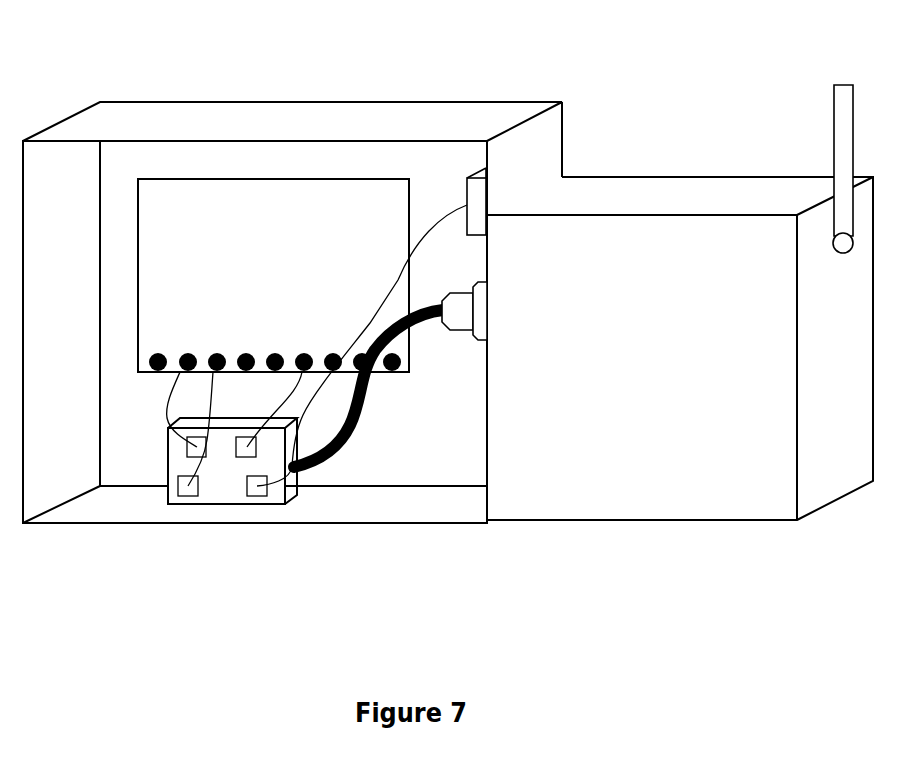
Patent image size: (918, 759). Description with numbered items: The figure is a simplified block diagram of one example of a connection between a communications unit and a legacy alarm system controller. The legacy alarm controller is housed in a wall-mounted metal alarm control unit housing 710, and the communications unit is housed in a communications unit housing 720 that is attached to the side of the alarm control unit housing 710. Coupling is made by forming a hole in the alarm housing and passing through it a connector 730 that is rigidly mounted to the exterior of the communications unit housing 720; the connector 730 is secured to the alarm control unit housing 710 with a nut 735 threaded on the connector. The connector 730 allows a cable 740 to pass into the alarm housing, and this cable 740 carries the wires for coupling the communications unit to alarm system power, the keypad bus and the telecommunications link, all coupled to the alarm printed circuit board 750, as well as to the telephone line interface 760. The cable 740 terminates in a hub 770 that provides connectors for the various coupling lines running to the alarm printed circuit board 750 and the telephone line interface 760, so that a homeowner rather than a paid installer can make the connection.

The alarm control unit housing 710 is at (190, 123).
The communications unit housing 720 is at (632, 195).
The connector 730 is at (448, 315).
The nut 735 is at (480, 325).
The cable 740 is at (333, 457).
The alarm printed circuit board 750 is at (303, 217).
The telephone line interface 760 is at (470, 185).
The hub 770 is at (216, 507).